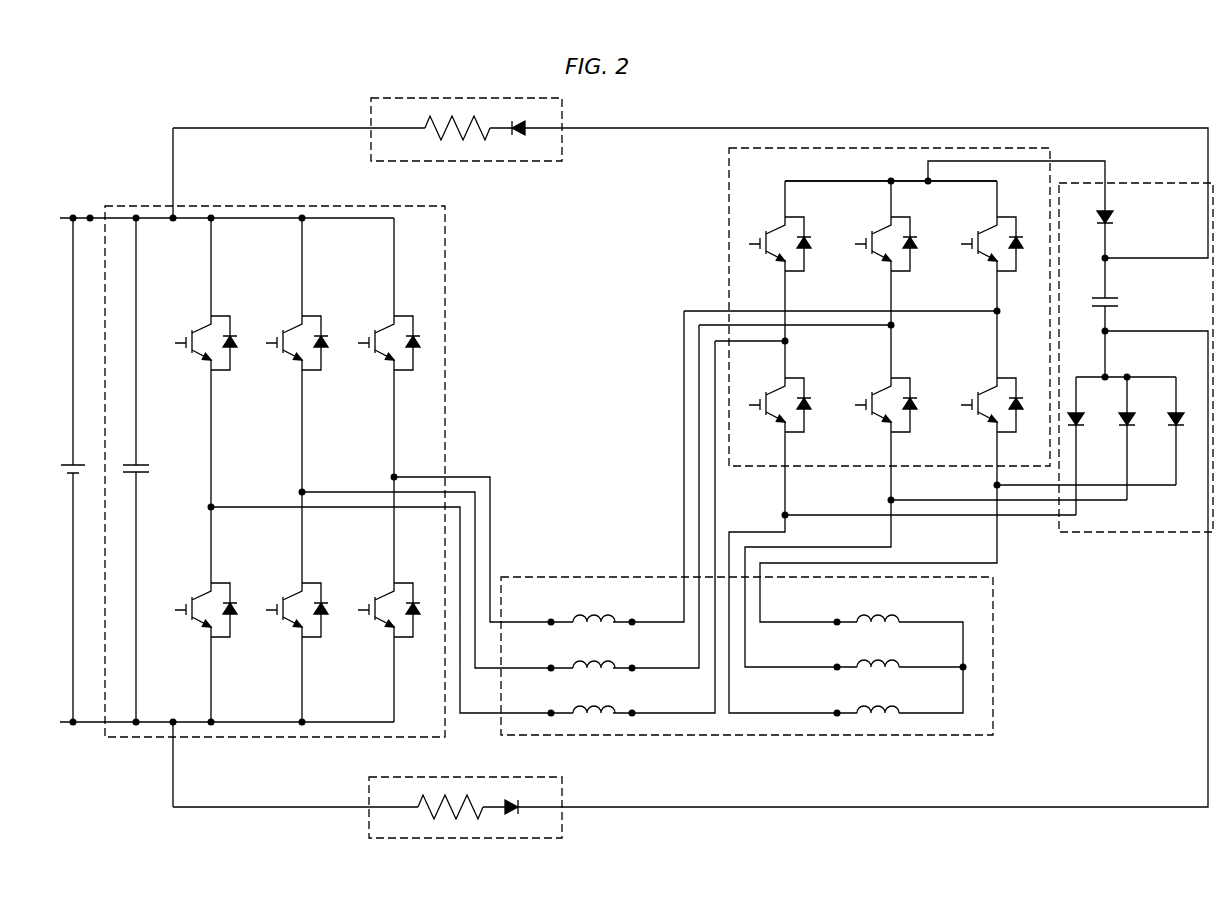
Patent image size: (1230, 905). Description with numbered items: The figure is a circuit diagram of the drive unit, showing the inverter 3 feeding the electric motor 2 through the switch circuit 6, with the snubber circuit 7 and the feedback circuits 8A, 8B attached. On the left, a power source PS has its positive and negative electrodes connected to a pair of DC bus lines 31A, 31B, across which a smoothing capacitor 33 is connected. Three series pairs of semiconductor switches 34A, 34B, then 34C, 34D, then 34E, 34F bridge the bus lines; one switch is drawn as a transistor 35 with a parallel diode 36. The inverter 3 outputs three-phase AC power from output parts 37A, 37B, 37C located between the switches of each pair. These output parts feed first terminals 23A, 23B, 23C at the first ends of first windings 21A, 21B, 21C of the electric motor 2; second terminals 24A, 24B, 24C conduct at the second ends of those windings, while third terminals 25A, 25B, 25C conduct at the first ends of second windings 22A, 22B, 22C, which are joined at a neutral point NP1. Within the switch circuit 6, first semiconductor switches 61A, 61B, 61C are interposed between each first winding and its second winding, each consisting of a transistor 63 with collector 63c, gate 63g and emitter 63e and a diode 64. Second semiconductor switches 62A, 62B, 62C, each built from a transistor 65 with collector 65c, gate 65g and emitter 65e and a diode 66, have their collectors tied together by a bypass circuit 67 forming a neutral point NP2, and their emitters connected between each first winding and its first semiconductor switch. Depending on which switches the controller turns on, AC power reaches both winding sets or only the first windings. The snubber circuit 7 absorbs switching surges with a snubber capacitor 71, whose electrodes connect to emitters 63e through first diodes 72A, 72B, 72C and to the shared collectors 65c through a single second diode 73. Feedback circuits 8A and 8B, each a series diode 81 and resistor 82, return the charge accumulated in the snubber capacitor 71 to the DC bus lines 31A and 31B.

The electric motor 2 is at (993, 723).
The inverter 3 is at (140, 206).
The switch circuit 6 is at (1007, 148).
The snubber circuit 7 is at (1143, 173).
The feedback circuit 8A is at (562, 105).
The feedback circuit 8B is at (562, 820).
The diode 81 is at (516, 139).
The resistor 82 is at (431, 141).
The first winding 21A is at (593, 616).
The first winding 21B is at (593, 662).
The first winding 21C is at (593, 707).
The second winding 22A is at (877, 616).
The second winding 22B is at (877, 661).
The second winding 22C is at (877, 707).
The first terminal 23A is at (551, 622).
The first terminal 23B is at (551, 668).
The first terminal 23C is at (551, 713).
The second terminal 24A is at (632, 622).
The second terminal 24B is at (632, 668).
The second terminal 24C is at (632, 713).
The third terminal 25A is at (837, 622).
The third terminal 25B is at (837, 667).
The third terminal 25C is at (837, 713).
The DC bus line 31A is at (90, 217).
The DC bus line 31B is at (90, 724).
The smoothing capacitor 33 is at (148, 460).
The semiconductor switch 34A is at (405, 303).
The semiconductor switch 34B is at (405, 571).
The semiconductor switch 34C is at (313, 303).
The semiconductor switch 34D is at (313, 571).
The semiconductor switch 34E is at (210, 331).
The semiconductor switch 34F is at (222, 571).
The transistor 35 is at (185, 331).
The diode 36 is at (231, 354).
The output part 37A is at (394, 477).
The output part 37B is at (302, 492).
The output part 37C is at (211, 507).
The first semiconductor switch 61A is at (1004, 372).
The first semiconductor switch 61B is at (903, 371).
The first semiconductor switch 61C is at (753, 407).
The second semiconductor switch 62A is at (986, 216).
The second semiconductor switch 62B is at (881, 216).
The second semiconductor switch 62C is at (760, 238).
The transistor 63 is at (706, 406).
The collector 63c is at (783, 381).
The gate 63g is at (754, 405).
The emitter 63e is at (784, 431).
The diode 64 is at (810, 418).
The transistor 65 is at (727, 238).
The collector 65c is at (783, 219).
The gate 65g is at (754, 243).
The emitter 65e is at (784, 270).
The diode 66 is at (810, 256).
The bypass circuit 67 is at (818, 181).
The snubber capacitor 71 is at (1124, 302).
The first diode 72A is at (1182, 434).
The first diode 72B is at (1136, 434).
The first diode 72C is at (1084, 434).
The second diode 73 is at (1120, 218).
The power source PS is at (63, 458).
The neutral point NP1 is at (963, 667).
The neutral point NP2 is at (891, 181).